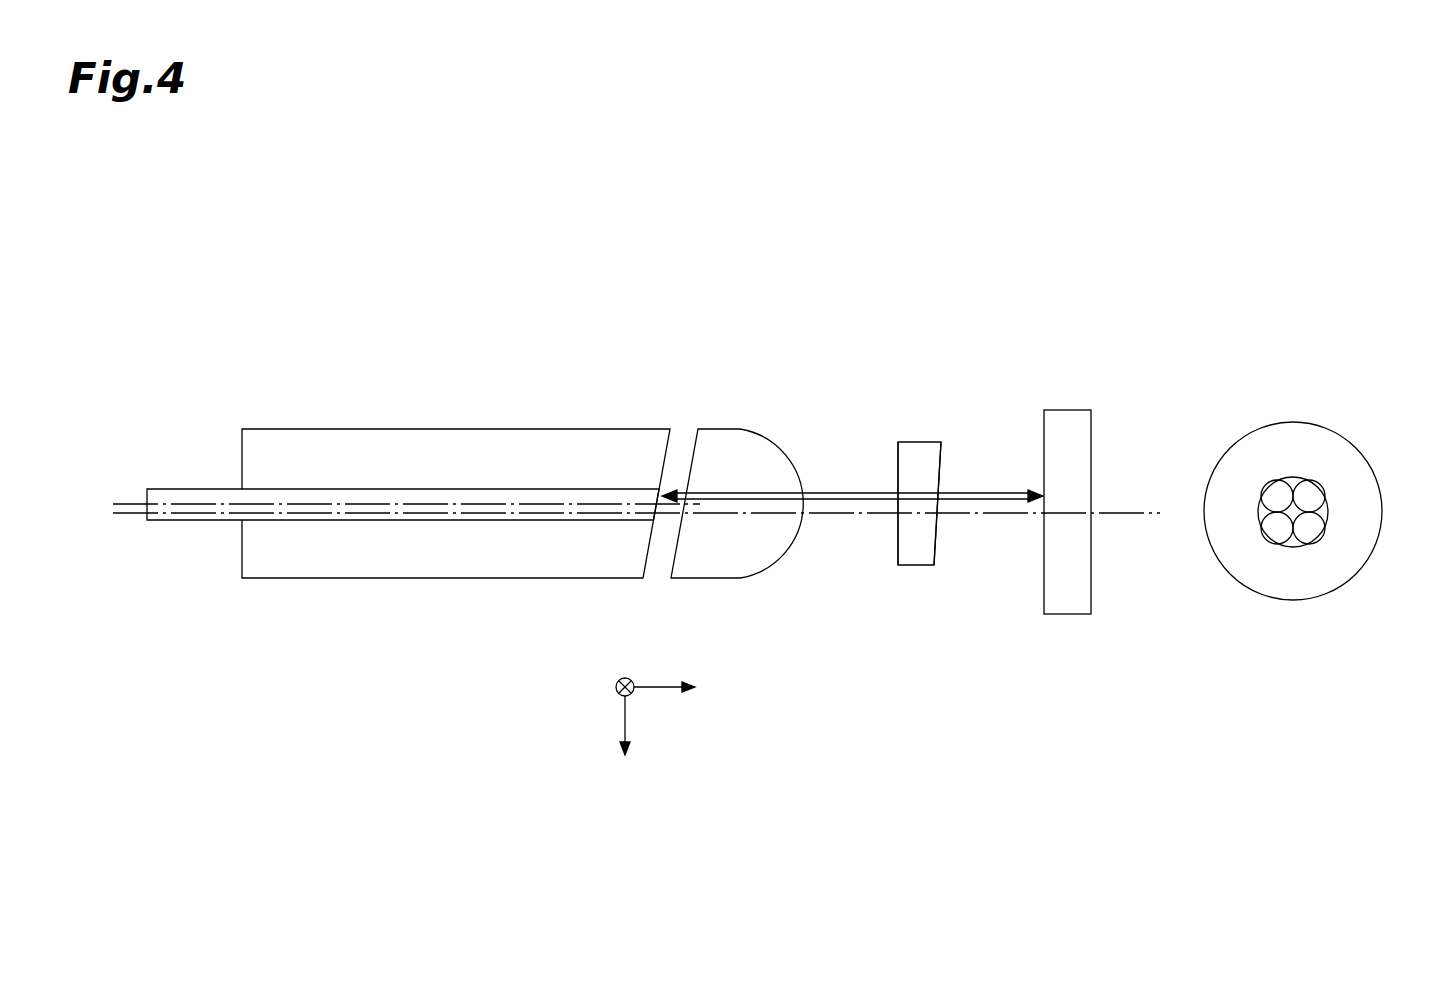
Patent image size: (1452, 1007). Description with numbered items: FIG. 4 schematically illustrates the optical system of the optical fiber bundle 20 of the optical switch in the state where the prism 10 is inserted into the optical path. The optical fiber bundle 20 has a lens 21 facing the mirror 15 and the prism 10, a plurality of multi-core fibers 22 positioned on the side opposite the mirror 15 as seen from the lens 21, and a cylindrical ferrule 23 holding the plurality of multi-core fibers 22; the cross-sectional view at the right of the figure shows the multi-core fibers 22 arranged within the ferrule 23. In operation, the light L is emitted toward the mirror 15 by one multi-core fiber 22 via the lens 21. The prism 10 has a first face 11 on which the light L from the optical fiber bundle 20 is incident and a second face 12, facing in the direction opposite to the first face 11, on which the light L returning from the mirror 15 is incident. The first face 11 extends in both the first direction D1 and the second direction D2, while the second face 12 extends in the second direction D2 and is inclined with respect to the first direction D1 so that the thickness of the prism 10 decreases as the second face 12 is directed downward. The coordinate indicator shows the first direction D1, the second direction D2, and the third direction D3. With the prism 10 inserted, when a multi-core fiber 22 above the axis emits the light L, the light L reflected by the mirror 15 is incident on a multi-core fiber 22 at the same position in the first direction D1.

The prism 10 is at (917, 456).
The first face 11 is at (898, 545).
The second face 12 is at (936, 540).
The mirror 15 is at (1068, 423).
The optical fiber bundle 20 is at (695, 320).
The lens 21 is at (733, 440).
The multi-core fibers 22 is at (322, 492).
The cylindrical ferrule 23 is at (542, 445).
The light L is at (833, 492).
The first direction D1 is at (625, 742).
The second direction D2 is at (605, 672).
The third direction D3 is at (685, 688).